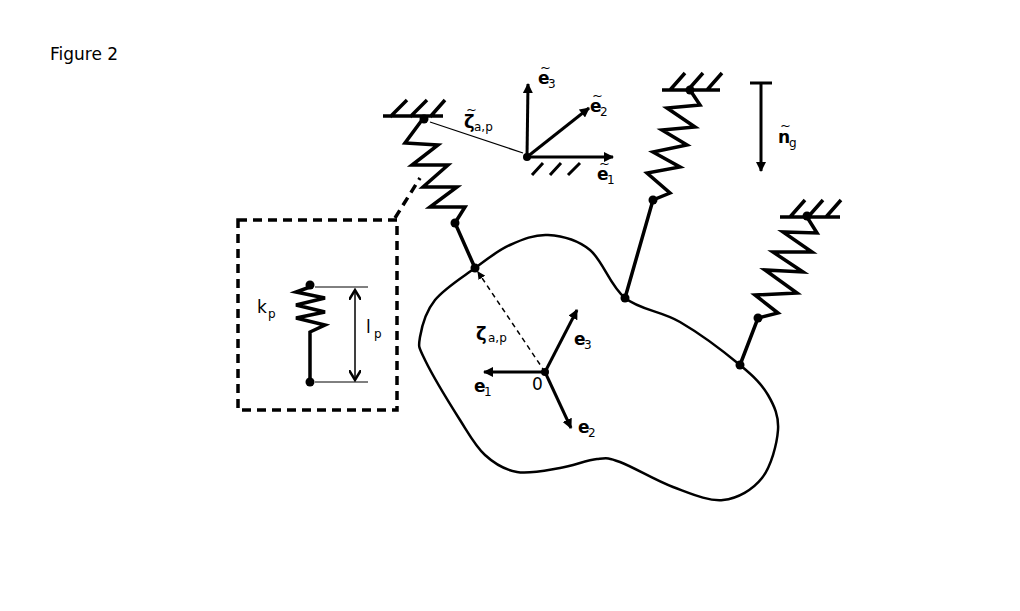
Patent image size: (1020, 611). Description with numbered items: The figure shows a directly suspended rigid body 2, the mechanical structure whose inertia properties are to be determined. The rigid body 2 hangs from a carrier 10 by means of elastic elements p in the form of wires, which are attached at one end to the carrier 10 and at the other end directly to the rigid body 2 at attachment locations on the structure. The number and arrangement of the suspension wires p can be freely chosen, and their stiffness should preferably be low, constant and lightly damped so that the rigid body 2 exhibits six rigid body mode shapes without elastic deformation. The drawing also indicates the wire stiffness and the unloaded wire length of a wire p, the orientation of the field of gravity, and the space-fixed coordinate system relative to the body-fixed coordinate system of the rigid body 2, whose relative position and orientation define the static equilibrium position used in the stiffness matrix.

The carrier 10 is at (415, 102).
The rigid body 2 is at (740, 448).
The elastic elements p is at (417, 163).